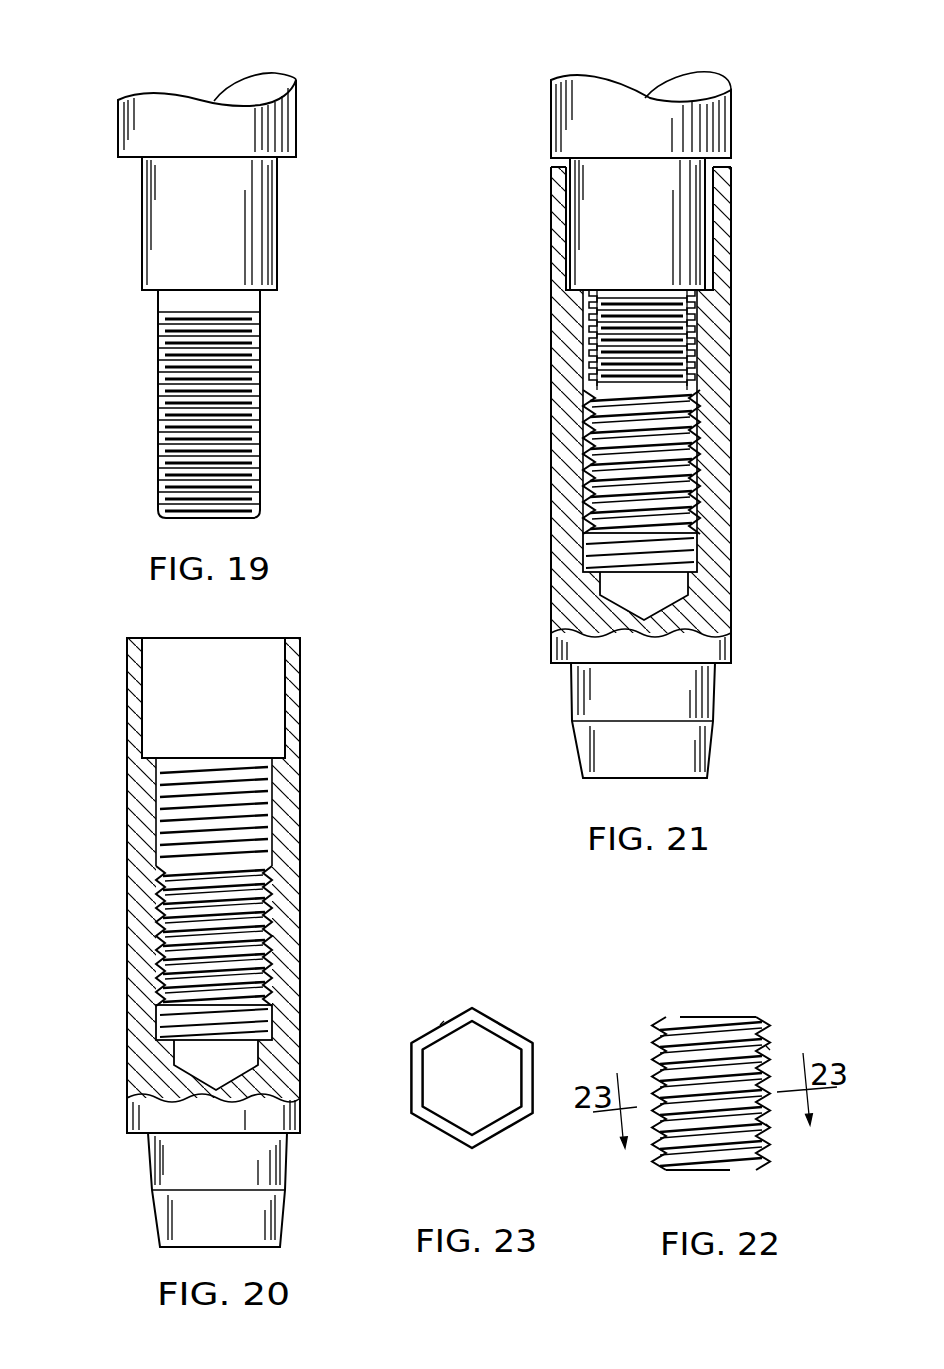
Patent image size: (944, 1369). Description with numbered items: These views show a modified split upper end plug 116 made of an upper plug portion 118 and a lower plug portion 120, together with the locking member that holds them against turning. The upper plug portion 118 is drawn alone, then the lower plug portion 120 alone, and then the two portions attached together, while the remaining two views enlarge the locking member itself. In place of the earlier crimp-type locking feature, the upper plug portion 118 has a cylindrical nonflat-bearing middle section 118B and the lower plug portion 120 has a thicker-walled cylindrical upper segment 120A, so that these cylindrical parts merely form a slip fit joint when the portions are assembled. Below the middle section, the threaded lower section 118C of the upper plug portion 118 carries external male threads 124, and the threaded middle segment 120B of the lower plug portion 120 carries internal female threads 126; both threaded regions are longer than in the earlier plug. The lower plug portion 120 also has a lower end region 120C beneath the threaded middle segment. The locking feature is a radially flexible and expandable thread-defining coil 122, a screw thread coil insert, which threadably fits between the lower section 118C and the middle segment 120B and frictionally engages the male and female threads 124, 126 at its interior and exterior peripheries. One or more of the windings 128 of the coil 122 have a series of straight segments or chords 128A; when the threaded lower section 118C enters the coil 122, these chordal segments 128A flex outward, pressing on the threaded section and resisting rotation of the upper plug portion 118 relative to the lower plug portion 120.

In FIG. 21, the modified split upper end plug 116 is at (540, 204).
In FIG. 19, the upper plug portion 118 is at (318, 116).
In FIG. 21, the upper plug portion 118 is at (748, 136).
In FIG. 19, the cylindrical nonflat-bearing middle section 118B is at (277, 226).
In FIG. 21, the cylindrical nonflat-bearing middle section 118B is at (703, 270).
In FIG. 19, the threaded lower section 118C is at (158, 450).
In FIG. 21, the threaded lower section 118C is at (690, 536).
In FIG. 20, the lower plug portion 120 is at (312, 795).
In FIG. 21, the lower plug portion 120 is at (750, 470).
In FIG. 20, the thicker-walled cylindrical upper segment 120A is at (300, 692).
In FIG. 21, the thicker-walled cylindrical upper segment 120A is at (551, 262).
In FIG. 20, the threaded middle segment 120B is at (136, 960).
In FIG. 21, the threaded middle segment 120B is at (548, 522).
In FIG. 20, the tapered end of socket 120C is at (162, 1170).
In FIG. 21, the tapered end of socket 120C is at (700, 704).
In FIG. 20, the radially flexible and expandable thread-defining coil 122 is at (276, 914).
In FIG. 21, the radially flexible and expandable thread-defining coil 122 is at (690, 415).
In FIG. 22, the radially flexible and expandable thread-defining coil 122 is at (746, 1010).
In FIG. 19, the external male threads 124 is at (235, 452).
In FIG. 21, the external male threads 124 is at (612, 490).
In FIG. 20, the internal female threads 126 is at (160, 1043).
In FIG. 21, the internal female threads 126 is at (590, 568).
In FIG. 23, the windings 128 is at (514, 1018).
In FIG. 22, the windings 128 is at (768, 1050).
In FIG. 23, the straight segments or chords 128A is at (490, 1026).